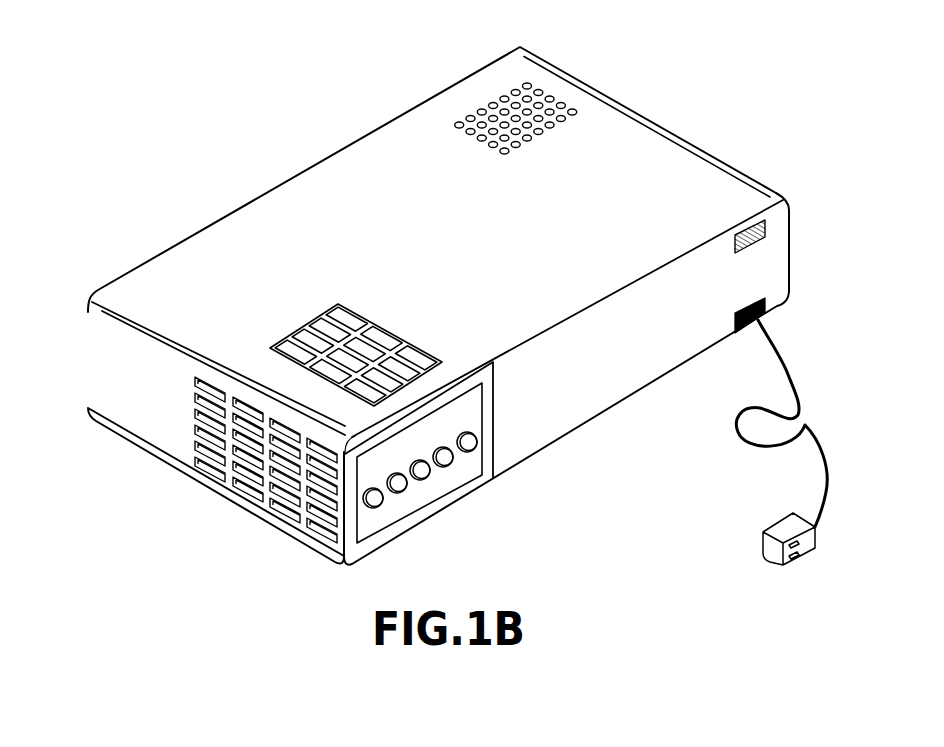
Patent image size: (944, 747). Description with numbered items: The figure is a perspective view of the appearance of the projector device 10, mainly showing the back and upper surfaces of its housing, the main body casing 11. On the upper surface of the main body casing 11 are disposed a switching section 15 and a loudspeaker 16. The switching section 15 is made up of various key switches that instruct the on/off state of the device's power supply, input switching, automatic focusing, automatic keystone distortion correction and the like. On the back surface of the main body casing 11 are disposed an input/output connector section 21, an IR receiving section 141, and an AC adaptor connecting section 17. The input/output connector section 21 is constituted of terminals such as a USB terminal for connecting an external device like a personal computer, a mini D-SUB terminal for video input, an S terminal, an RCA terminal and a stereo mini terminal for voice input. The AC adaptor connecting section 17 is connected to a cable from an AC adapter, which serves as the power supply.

The projector device 10 is at (288, 104).
The main body casing 11 is at (577, 92).
The switching section 15 is at (385, 337).
The loudspeaker 16 is at (482, 110).
The IR receiving section 141 is at (753, 222).
The AC adaptor connecting section 17 is at (766, 308).
The input/output connector section 21 is at (443, 485).